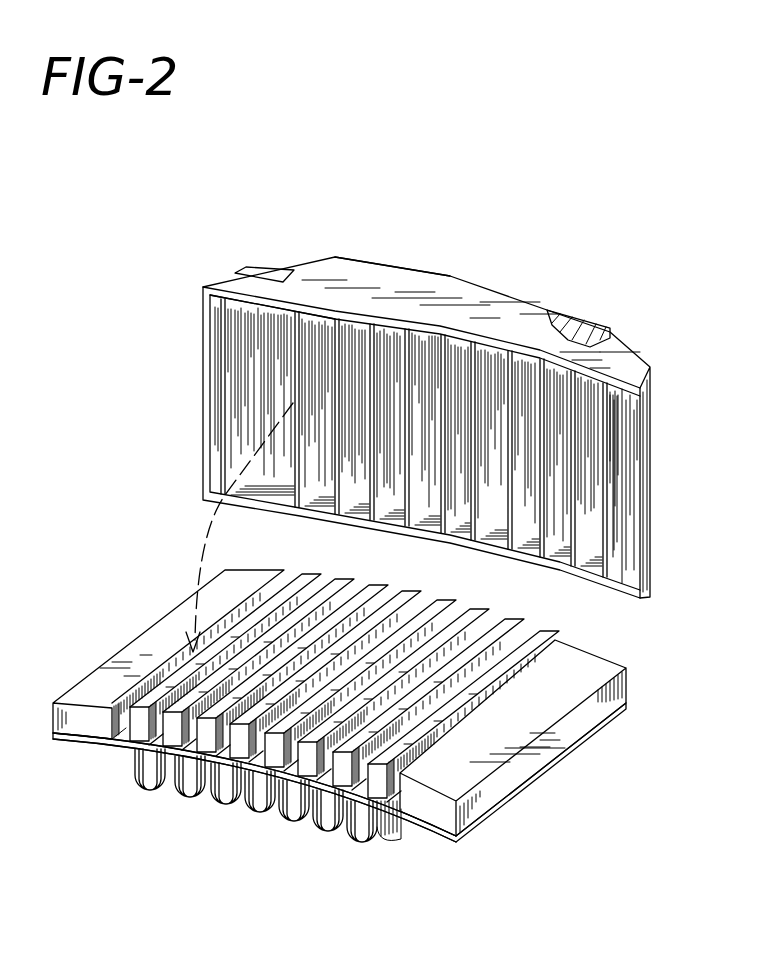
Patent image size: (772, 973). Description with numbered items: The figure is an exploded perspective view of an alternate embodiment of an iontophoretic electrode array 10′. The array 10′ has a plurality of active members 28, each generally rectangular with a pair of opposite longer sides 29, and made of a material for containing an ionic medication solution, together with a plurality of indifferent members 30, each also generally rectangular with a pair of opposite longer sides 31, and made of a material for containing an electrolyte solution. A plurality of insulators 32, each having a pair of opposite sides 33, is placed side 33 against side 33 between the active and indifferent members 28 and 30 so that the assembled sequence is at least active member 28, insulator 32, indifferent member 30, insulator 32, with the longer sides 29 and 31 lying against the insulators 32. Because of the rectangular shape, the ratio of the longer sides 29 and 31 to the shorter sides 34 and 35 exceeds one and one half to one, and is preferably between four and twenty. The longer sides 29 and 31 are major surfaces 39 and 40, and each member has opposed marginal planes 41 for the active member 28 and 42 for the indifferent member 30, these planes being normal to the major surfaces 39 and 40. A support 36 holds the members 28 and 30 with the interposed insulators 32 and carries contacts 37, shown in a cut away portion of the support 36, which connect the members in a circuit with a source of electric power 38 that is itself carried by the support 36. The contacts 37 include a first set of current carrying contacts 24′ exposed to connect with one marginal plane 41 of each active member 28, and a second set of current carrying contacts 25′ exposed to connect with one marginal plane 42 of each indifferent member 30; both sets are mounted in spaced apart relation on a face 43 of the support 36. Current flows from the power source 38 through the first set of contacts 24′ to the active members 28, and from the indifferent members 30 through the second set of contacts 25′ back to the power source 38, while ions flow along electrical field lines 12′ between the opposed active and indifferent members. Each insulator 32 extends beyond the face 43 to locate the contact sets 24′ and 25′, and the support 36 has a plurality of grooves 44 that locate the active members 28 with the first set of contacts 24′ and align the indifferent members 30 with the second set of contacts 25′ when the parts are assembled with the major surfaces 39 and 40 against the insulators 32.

The array 10′ is at (540, 70).
The electrical field lines 12′ is at (392, 802).
The first set of current carrying contacts 24′ is at (553, 317).
The second set of current carrying contacts 25′ is at (611, 327).
The active member 28 is at (507, 625).
The longer sides of active member 29 is at (357, 580).
The indifferent member 30 is at (310, 770).
The longer sides of indifferent member 31 is at (460, 617).
The insulator 32 is at (403, 322).
The sides of insulator 33 is at (583, 450).
The shorter sides of active member 34 is at (100, 741).
The shorter sides of indifferent member 35 is at (377, 790).
The support 36 is at (325, 274).
The contacts 37 is at (563, 313).
The source of electric power 38 is at (243, 270).
The major surfaces of active member 39 is at (388, 590).
The major surfaces of indifferent member 40 is at (553, 638).
The marginal planes of active member 41 is at (130, 717).
The marginal planes of indifferent member 42 is at (162, 718).
The face 43 is at (568, 315).
The grooves 44 is at (612, 525).